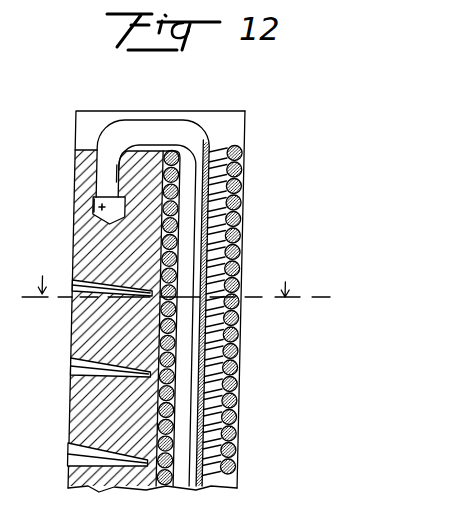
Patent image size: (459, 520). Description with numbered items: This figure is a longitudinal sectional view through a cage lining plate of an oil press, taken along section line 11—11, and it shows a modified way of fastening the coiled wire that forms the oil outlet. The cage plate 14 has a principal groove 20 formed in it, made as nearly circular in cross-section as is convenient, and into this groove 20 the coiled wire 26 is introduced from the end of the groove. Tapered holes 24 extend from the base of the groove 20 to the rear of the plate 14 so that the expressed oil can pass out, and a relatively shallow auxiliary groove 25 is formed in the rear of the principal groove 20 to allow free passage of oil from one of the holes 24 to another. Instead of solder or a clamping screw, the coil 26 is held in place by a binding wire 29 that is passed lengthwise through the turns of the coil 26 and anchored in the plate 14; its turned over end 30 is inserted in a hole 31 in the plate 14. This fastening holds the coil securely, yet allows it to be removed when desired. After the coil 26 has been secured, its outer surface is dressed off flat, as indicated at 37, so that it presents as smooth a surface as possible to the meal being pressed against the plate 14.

The section line 11- 11 is at (179, 294).
The cage plate 14 is at (88, 418).
The groove 20 is at (242, 340).
The tapered holes 24 is at (92, 302).
The auxiliary groove 25 is at (152, 434).
The coiled wire 26 is at (242, 287).
The binding wire 29 is at (243, 232).
The turned over end 30 is at (113, 177).
The hole 31 is at (97, 208).
The dressed off flat surface 37 is at (241, 318).